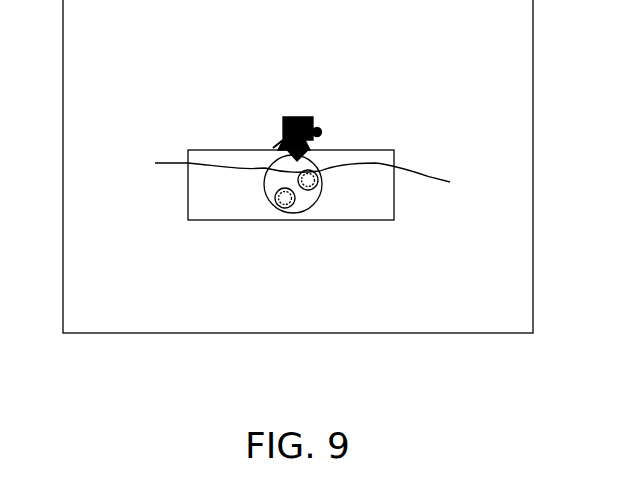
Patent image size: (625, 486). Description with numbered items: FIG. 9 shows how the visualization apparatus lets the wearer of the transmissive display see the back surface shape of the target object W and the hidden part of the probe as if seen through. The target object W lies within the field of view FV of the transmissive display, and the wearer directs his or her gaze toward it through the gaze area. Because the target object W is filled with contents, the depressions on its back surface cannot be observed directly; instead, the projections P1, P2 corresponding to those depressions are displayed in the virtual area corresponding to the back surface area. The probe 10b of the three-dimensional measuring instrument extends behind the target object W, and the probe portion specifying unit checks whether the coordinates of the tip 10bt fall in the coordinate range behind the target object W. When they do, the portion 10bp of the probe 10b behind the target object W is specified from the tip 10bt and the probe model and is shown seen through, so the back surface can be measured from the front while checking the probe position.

The field of view FV is at (297, 334).
The target object W is at (205, 150).
The probe 10b is at (297, 117).
The tip of the probe 10bt is at (155, 163).
The portion of the probe 10bp is at (346, 179).
The projection P1 is at (283, 208).
The projection P2 is at (316, 187).